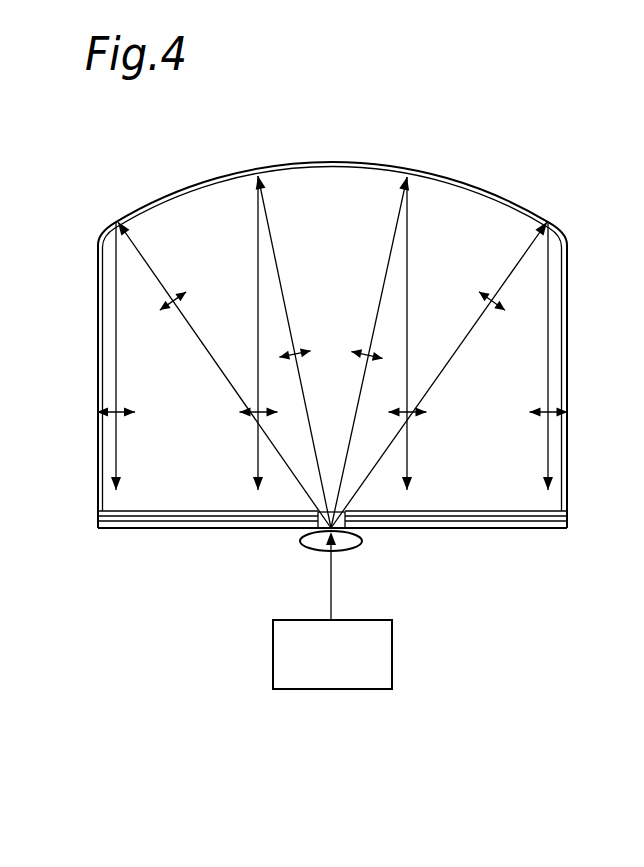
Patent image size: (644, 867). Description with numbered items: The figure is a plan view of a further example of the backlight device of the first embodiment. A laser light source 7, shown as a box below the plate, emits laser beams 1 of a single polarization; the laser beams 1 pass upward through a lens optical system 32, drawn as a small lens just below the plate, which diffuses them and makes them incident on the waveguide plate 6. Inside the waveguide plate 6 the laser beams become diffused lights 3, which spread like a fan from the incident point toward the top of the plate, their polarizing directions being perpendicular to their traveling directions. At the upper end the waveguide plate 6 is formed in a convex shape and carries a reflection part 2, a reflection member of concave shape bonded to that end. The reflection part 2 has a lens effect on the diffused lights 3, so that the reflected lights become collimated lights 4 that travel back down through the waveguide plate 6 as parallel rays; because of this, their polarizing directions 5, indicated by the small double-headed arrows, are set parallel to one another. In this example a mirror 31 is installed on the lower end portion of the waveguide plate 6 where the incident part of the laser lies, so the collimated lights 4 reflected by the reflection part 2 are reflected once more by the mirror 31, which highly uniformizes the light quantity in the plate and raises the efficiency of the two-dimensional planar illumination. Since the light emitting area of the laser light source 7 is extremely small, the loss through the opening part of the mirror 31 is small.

The laser beams 1 is at (330, 598).
The reflection part 2 is at (437, 170).
The diffused lights 3 is at (136, 250).
The collimated lights 4 is at (116, 298).
The polarizing directions 5 is at (100, 402).
The waveguide plate 6 is at (502, 493).
The laser light source 7 is at (392, 648).
The mirror 31 is at (567, 529).
The lens optical system 32 is at (362, 544).